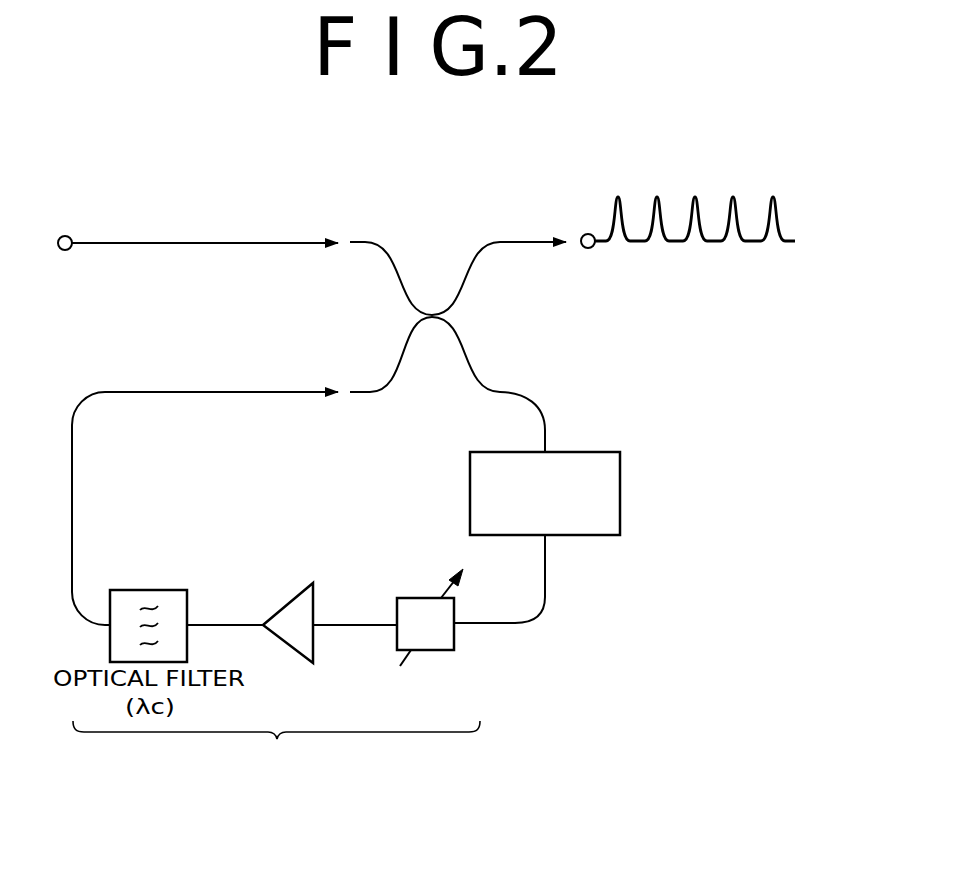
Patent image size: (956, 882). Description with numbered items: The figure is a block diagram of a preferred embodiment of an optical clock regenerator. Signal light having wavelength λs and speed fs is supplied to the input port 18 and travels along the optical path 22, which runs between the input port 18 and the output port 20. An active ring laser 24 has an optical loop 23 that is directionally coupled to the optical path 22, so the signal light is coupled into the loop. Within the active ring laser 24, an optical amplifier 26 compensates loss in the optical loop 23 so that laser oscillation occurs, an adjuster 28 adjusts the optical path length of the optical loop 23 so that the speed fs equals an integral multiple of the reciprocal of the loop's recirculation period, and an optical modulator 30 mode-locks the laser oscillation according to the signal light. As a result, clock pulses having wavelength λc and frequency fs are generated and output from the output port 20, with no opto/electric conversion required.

The input port 18 is at (65, 250).
The output port 20 is at (588, 234).
The optical path 22 is at (498, 241).
The optical loop 23 is at (500, 389).
The active ring laser 24 is at (276, 746).
The optical amplifier 26 is at (287, 604).
The adjuster 28 is at (427, 598).
The optical modulator 30 is at (622, 493).